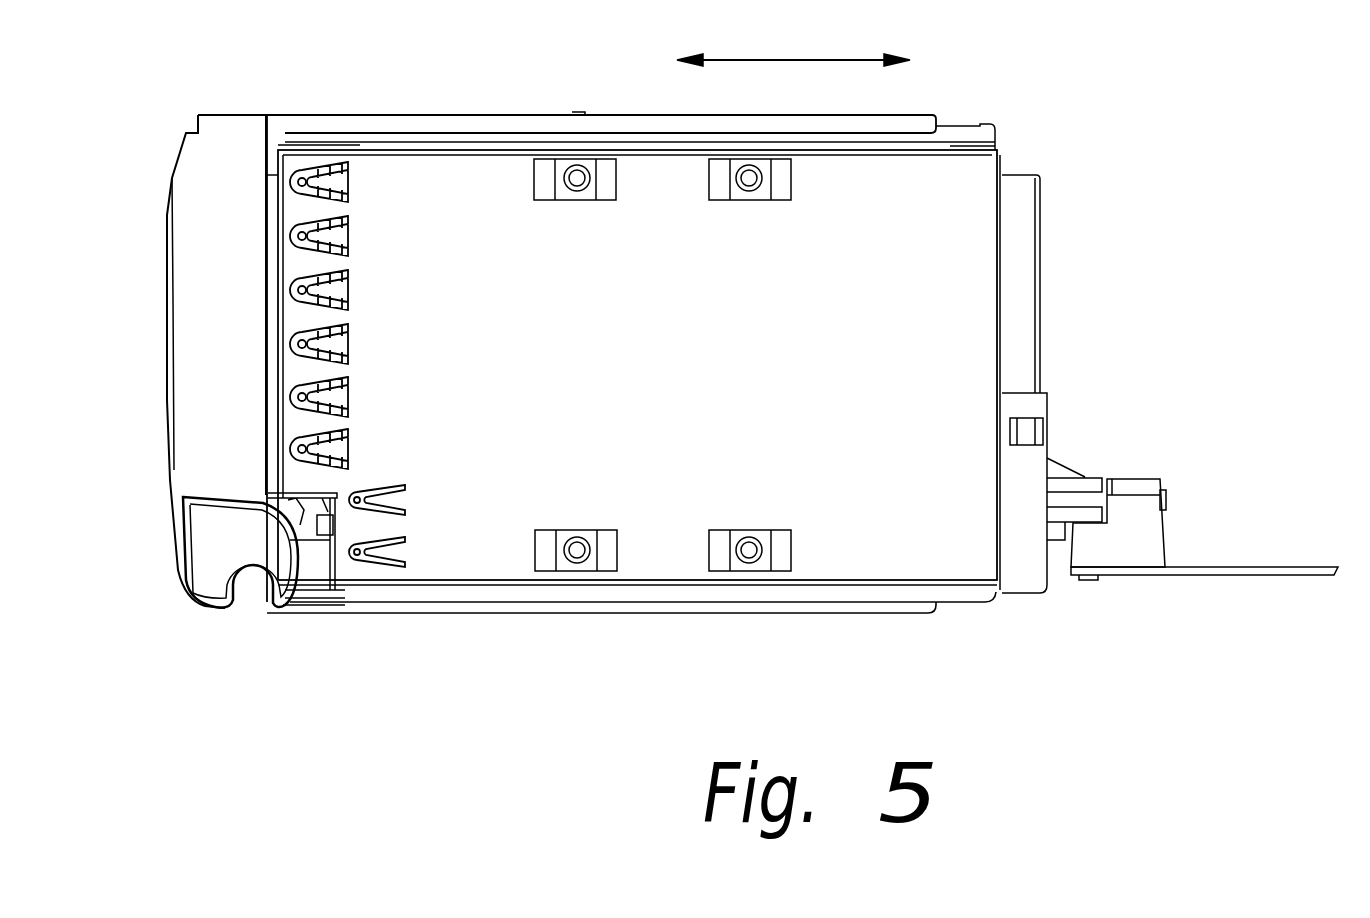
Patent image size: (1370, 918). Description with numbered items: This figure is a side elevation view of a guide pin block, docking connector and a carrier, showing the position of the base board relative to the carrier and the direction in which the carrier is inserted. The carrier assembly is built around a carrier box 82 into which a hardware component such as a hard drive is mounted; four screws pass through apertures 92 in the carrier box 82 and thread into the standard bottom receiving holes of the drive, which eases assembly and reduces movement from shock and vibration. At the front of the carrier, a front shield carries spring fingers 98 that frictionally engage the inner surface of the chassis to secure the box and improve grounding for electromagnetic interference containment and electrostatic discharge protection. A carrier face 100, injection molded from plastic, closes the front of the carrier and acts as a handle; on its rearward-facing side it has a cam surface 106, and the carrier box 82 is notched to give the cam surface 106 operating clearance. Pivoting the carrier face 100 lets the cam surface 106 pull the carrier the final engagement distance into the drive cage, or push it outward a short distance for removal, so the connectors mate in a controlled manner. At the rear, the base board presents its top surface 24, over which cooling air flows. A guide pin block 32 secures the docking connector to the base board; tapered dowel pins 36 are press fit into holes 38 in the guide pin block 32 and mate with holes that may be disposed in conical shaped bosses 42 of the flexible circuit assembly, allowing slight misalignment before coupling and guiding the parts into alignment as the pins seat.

The top surface 24 is at (1261, 567).
The guide pin block 32 is at (1125, 550).
The dowel pins 36 is at (1167, 498).
The holes 38 is at (1166, 488).
The conical shaped bosses 42 is at (1081, 482).
The carrier box 82 is at (842, 350).
The apertures 92 is at (578, 184).
The spring fingers 98 is at (338, 290).
The carrier face 100 is at (246, 336).
The cam surface 106 is at (266, 548).